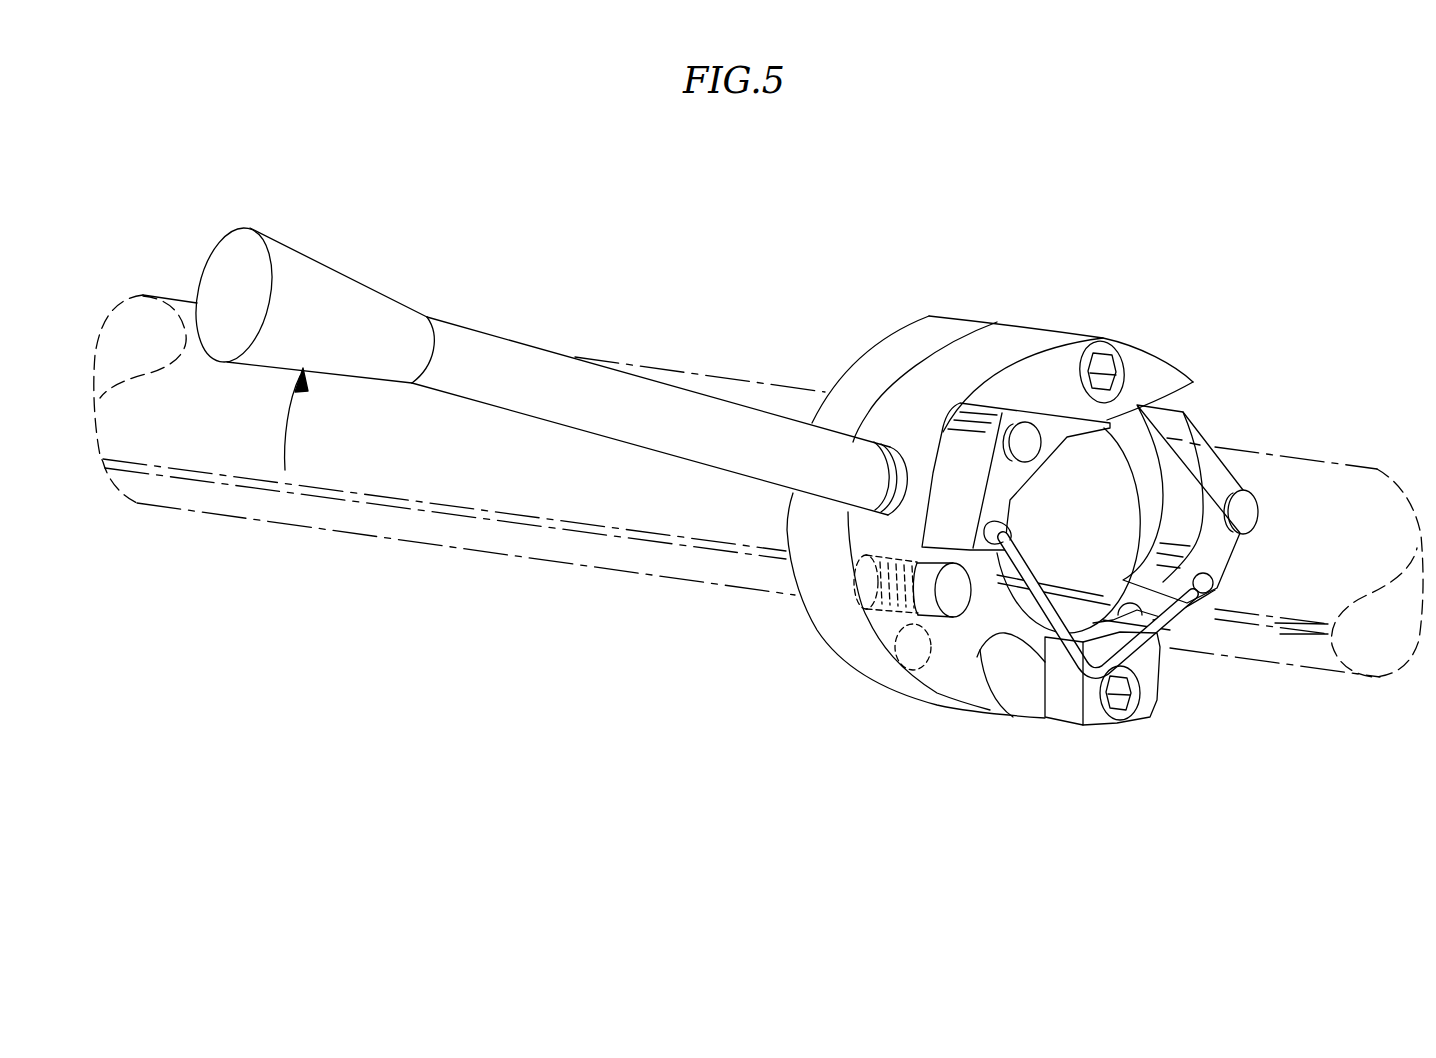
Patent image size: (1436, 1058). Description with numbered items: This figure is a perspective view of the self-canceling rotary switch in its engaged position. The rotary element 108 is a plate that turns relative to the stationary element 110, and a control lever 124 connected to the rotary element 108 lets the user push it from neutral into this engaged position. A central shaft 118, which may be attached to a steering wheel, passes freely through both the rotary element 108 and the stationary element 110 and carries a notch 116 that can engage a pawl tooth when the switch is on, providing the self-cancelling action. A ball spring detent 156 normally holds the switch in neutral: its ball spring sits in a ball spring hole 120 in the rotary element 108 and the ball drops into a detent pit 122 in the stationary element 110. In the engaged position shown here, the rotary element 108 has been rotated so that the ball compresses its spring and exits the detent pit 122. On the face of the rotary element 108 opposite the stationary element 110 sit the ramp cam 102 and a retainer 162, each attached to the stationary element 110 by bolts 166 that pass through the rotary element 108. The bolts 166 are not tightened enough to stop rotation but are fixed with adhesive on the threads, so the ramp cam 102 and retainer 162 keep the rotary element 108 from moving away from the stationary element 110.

The ramp cam 102 is at (1053, 347).
The rotary element 108 is at (1003, 338).
The stationary element 110 is at (955, 323).
The notch 116 is at (1283, 630).
The central shaft 118 is at (1245, 463).
The ball spring hole 120 is at (953, 600).
The detent pit 122 is at (903, 647).
The control lever 124 is at (503, 348).
The ball spring detent 156 is at (887, 594).
The retainer 162 is at (1070, 703).
The bolts 166 is at (1103, 365).